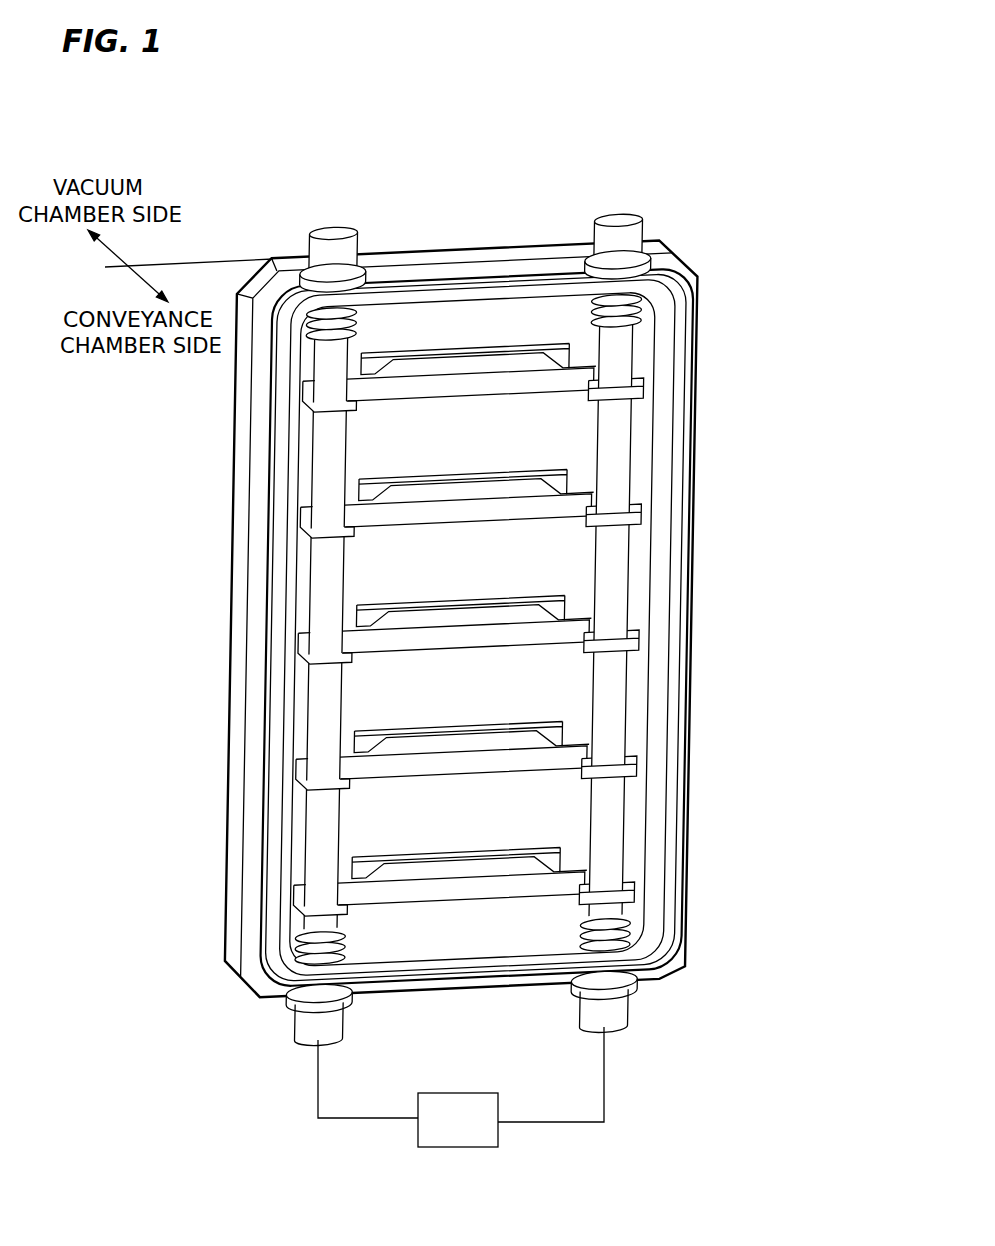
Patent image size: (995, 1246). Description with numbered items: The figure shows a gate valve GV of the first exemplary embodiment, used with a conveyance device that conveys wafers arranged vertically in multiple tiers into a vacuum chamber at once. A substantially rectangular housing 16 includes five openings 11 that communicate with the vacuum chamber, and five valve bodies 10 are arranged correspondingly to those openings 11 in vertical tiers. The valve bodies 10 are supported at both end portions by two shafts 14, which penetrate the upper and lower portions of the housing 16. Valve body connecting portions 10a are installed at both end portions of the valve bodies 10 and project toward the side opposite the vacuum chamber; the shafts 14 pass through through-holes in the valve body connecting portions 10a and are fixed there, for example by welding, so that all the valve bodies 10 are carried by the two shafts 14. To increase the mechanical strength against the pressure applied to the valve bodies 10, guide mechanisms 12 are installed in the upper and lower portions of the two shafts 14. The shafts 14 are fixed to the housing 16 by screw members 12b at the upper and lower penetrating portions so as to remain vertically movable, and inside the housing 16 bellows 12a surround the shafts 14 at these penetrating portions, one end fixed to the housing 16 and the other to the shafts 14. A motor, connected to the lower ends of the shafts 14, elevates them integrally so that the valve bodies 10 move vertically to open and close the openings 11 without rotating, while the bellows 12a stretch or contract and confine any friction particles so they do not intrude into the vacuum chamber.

The gate valve GV is at (717, 261).
The valve body 10 is at (468, 396).
The valve body connecting portion 10a is at (350, 785).
The opening 11 is at (440, 351).
The guide mechanism 12 is at (373, 325).
The bellows 12a is at (312, 318).
The screw member 12b is at (362, 263).
The shaft 14 is at (314, 821).
The housing 16 is at (673, 852).